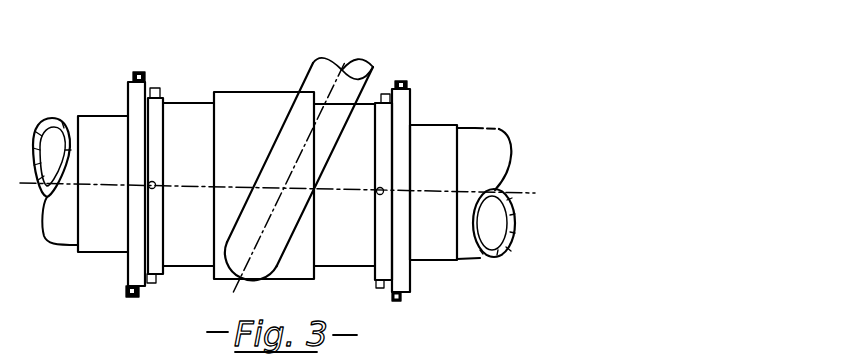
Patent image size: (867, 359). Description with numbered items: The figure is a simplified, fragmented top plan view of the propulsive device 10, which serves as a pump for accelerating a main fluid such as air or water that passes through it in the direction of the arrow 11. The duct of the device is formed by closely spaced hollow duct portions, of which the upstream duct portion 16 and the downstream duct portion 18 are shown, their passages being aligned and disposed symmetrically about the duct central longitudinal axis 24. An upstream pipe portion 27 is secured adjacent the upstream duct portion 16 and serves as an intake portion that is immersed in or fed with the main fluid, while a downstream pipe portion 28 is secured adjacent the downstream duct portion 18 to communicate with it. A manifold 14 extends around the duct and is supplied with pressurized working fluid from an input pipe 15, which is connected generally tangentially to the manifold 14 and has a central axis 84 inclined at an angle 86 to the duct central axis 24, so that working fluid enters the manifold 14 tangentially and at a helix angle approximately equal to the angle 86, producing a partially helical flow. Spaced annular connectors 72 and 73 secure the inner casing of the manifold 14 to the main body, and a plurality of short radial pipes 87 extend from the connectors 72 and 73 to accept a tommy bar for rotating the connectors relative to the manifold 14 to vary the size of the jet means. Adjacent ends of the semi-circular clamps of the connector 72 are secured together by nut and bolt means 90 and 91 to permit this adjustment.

The propulsive device 10 is at (447, 270).
The arrow 11 is at (532, 207).
The manifold 14 is at (270, 126).
The input pipe 15 is at (358, 42).
The upstream duct portion 16 is at (445, 118).
The downstream duct portion 18 is at (98, 238).
The duct central longitudinal axis 24 is at (510, 191).
The upstream pipe portion 27 is at (485, 157).
The downstream pipe portion 28 is at (68, 118).
The annular connector 72 is at (397, 247).
The annular connector 73 is at (128, 273).
The central axis 84 is at (236, 291).
The angle 86 is at (304, 163).
The short radial pipes 87 is at (160, 88).
The nut and bolt means 90 is at (396, 302).
The nut and bolt means 91 is at (409, 84).